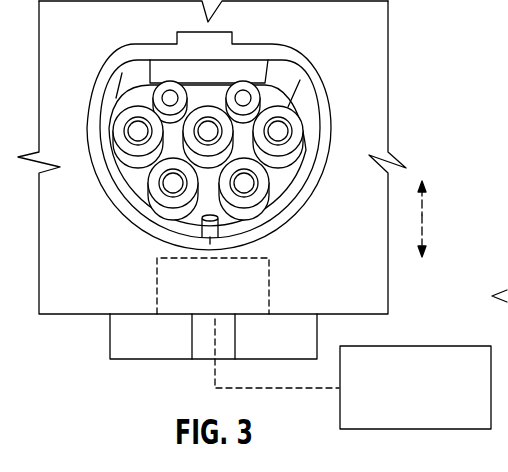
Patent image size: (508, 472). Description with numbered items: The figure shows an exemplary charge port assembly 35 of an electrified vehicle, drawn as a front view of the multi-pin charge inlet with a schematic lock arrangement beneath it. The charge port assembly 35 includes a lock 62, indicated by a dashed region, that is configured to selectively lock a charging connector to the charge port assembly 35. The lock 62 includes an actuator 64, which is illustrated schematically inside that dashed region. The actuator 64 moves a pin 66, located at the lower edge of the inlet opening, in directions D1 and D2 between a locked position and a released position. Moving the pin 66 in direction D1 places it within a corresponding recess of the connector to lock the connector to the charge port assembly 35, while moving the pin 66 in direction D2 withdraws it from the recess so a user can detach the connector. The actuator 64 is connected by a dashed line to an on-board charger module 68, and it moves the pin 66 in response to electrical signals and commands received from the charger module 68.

The charge port assembly 35 is at (329, 93).
The lock 62 is at (272, 268).
The actuator 64 is at (227, 298).
The pin 66 is at (210, 227).
The charger module 68 is at (427, 346).
The direction D1 is at (424, 200).
The direction D2 is at (424, 243).